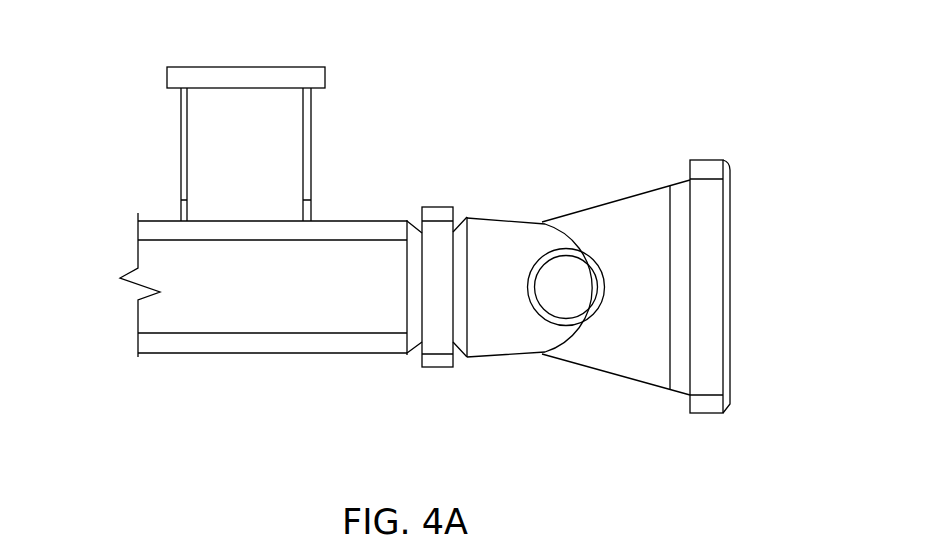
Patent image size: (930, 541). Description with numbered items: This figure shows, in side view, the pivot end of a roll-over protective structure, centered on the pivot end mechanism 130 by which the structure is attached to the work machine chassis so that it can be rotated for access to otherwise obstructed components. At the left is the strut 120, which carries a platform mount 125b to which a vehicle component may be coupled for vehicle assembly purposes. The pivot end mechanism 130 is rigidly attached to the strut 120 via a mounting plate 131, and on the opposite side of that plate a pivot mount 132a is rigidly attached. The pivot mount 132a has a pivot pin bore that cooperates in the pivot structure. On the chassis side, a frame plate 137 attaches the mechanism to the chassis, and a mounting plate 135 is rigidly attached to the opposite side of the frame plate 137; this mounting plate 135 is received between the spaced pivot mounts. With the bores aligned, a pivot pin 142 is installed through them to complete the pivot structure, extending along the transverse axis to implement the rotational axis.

The strut 120 is at (361, 221).
The platform mount 125b is at (247, 67).
The pivot end mechanism 130 is at (520, 67).
The mounting plate 131 is at (438, 207).
The pivot mount 132a is at (529, 297).
The mounting plate 135 is at (617, 198).
The frame plate 137 is at (703, 160).
The pivot pin 142 is at (566, 287).